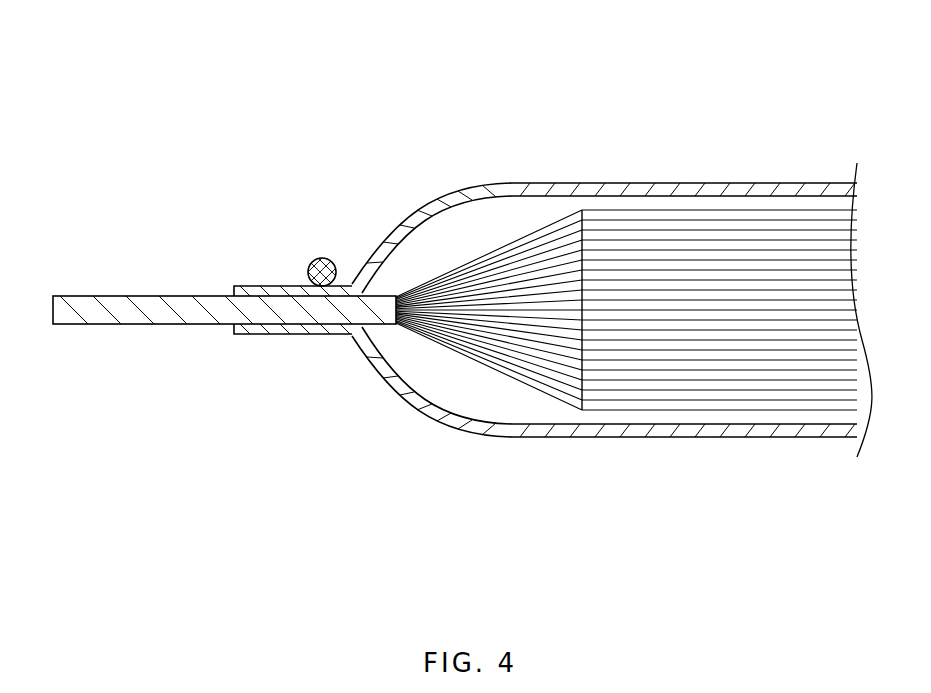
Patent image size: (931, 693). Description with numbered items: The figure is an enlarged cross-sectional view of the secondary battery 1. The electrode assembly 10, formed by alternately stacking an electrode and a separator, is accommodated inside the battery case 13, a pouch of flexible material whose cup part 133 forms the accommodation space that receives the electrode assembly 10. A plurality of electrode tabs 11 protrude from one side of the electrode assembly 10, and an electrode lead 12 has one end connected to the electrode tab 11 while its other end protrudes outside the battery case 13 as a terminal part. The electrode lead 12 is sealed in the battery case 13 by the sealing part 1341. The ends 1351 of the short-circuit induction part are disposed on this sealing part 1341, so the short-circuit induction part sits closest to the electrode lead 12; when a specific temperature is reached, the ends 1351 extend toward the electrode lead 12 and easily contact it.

The secondary battery 1 is at (564, 88).
The electrode assembly 10 is at (720, 376).
The electrode tabs 11 is at (517, 260).
The electrode leads 12 is at (136, 325).
The battery case 13 is at (727, 187).
The cup part 133 is at (421, 409).
The sealing part 1341 is at (292, 336).
The ends of the short-circuit induction part 1351 is at (322, 257).